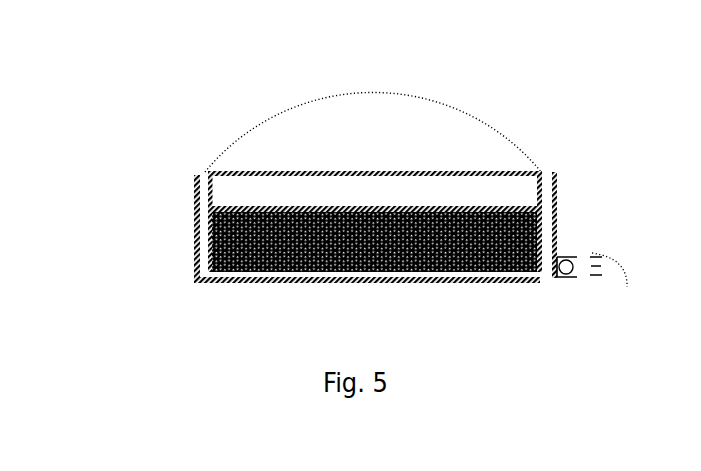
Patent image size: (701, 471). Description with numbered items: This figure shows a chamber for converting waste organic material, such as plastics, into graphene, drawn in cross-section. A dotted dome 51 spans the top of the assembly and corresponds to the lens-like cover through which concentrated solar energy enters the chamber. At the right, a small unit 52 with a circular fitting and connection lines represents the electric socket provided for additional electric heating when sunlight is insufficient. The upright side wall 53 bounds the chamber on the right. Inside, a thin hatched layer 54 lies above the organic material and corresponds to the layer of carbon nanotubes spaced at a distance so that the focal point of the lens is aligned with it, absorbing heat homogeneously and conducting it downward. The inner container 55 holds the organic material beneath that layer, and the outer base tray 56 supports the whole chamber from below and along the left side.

The transparent dome cover 51 is at (497, 155).
The valve unit 52 is at (568, 259).
The side wall 53 is at (558, 180).
The headspace layer 54 is at (323, 196).
The inner container 55 is at (207, 247).
The outer base tray 56 is at (190, 266).